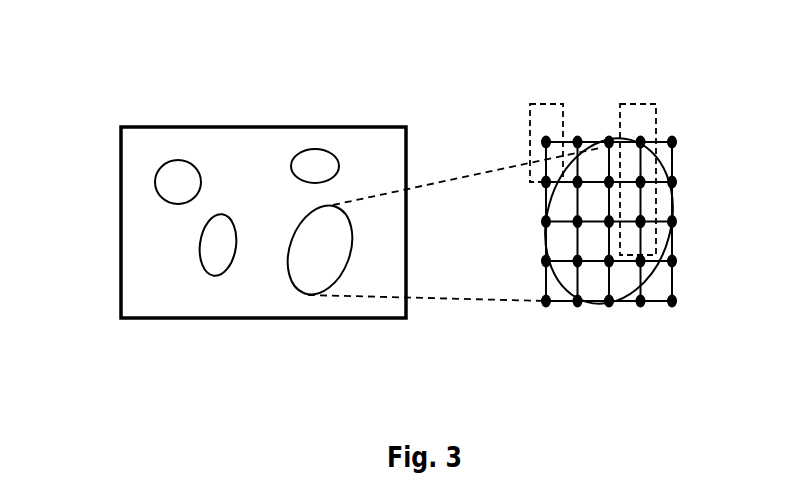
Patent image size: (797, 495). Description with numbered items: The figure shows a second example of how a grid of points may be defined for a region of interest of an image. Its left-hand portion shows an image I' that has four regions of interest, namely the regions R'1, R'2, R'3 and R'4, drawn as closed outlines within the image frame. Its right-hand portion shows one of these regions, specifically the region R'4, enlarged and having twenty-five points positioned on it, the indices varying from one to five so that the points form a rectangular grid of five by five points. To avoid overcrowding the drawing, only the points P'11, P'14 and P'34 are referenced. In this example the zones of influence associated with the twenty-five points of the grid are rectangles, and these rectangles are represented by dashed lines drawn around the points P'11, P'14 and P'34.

The image I' is at (214, 222).
The region of interest R'1 is at (339, 103).
The region of interest R'2 is at (168, 113).
The region of interest R'3 is at (193, 302).
The region of interest R'4 is at (337, 294).
The point P'11 is at (569, 125).
The point P'14 is at (671, 165).
The point P'34 is at (702, 180).